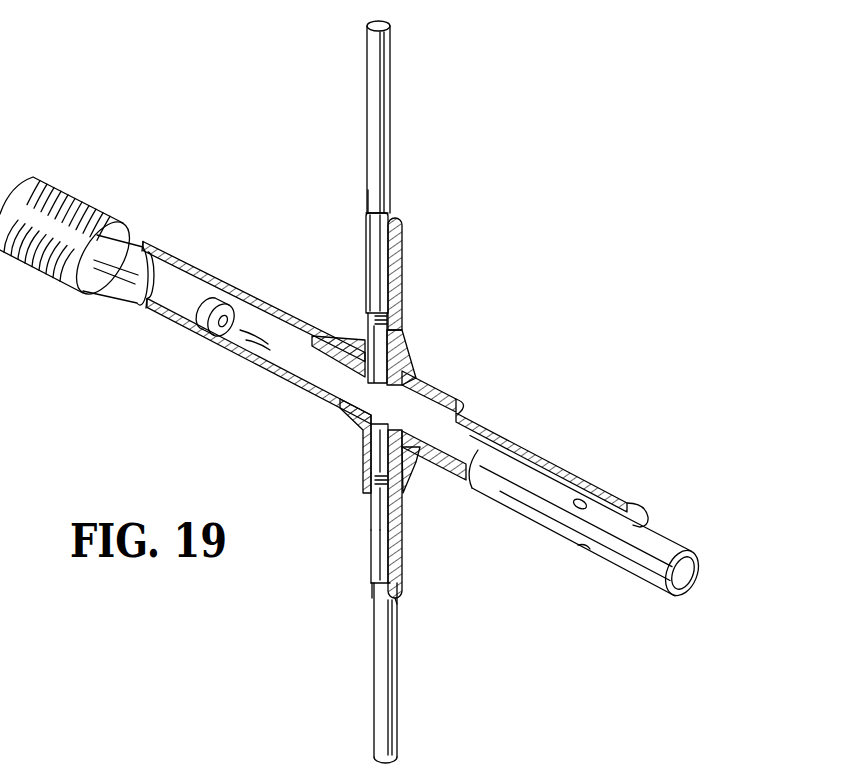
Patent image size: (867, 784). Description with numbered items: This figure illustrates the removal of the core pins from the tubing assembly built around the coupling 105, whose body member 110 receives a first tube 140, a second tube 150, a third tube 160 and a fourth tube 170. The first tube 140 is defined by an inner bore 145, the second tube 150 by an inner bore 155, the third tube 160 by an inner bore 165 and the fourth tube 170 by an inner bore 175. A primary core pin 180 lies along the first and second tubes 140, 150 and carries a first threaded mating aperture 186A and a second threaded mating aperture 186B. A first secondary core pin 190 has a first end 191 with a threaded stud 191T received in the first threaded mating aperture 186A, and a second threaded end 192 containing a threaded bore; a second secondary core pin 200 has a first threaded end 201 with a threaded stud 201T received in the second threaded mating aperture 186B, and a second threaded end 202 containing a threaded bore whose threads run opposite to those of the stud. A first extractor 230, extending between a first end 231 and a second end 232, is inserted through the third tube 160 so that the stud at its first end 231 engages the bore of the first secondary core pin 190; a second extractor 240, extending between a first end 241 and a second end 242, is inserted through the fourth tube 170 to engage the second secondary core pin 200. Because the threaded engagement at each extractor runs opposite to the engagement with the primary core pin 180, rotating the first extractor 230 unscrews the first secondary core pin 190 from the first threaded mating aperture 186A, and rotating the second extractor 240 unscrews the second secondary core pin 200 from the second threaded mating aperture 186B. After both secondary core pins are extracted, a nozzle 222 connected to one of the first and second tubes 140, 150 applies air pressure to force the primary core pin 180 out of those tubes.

The coupling 105 is at (172, 51).
The body member 110 is at (423, 392).
The first tube 140 is at (192, 262).
The inner bore 145 is at (270, 350).
The second tube 150 is at (640, 518).
The inner bore 155 is at (467, 442).
The third tube 160 is at (403, 536).
The inner bore 165 is at (380, 442).
The fourth tube 170 is at (395, 251).
The inner bore 175 is at (382, 349).
The primary core pin 180 is at (650, 590).
The first threaded mating aperture 186A is at (584, 547).
The second threaded mating aperture 186B is at (584, 500).
The first secondary core pin 190 is at (383, 549).
The first end 191 is at (380, 496).
The threaded stud 191T is at (377, 483).
The second threaded end 192 is at (382, 573).
The second secondary core pin 200 is at (400, 283).
The first threaded end 201 is at (404, 331).
The threaded stud 201T is at (392, 317).
The second threaded end 202 is at (378, 221).
The nozzle 222 is at (128, 278).
The first extractor 230 is at (386, 673).
The first end 231 is at (390, 600).
The second end 232 is at (383, 732).
The second extractor 240 is at (421, 113).
The first end 241 is at (388, 196).
The second end 242 is at (385, 35).